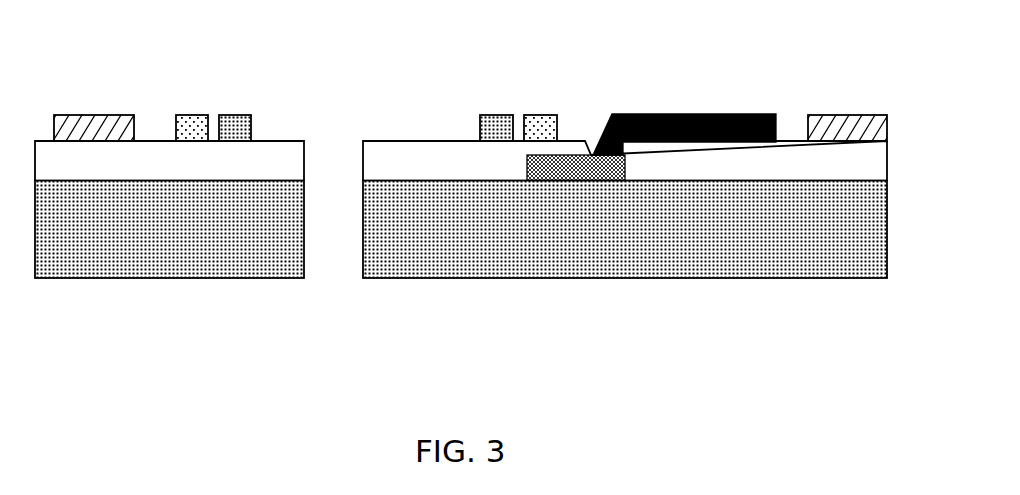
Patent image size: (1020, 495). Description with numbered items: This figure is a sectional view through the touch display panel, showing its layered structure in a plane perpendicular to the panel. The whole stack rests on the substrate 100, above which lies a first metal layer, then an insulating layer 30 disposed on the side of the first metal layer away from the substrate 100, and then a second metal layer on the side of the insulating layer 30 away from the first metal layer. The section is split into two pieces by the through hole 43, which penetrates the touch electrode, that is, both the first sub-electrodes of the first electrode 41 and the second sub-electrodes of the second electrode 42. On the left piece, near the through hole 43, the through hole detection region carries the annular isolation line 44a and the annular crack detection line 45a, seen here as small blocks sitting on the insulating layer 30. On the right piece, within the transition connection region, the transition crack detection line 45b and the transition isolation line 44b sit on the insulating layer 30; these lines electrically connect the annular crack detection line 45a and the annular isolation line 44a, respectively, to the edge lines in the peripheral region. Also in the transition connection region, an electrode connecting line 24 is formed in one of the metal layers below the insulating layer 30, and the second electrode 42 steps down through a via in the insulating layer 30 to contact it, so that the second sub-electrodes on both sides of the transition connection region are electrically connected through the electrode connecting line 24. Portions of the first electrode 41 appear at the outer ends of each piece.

The substrate 100 is at (415, 239).
The insulating layer 30 is at (683, 167).
The electrode connecting line 24 is at (559, 169).
The second electrode 42 is at (688, 116).
The first electrode 41 is at (86, 132).
The through hole 43 is at (329, 218).
The annular isolation line 44a is at (185, 128).
The annular crack detection line 45a is at (238, 128).
The transition isolation line 44b is at (542, 128).
The transition crack detection line 45b is at (503, 128).